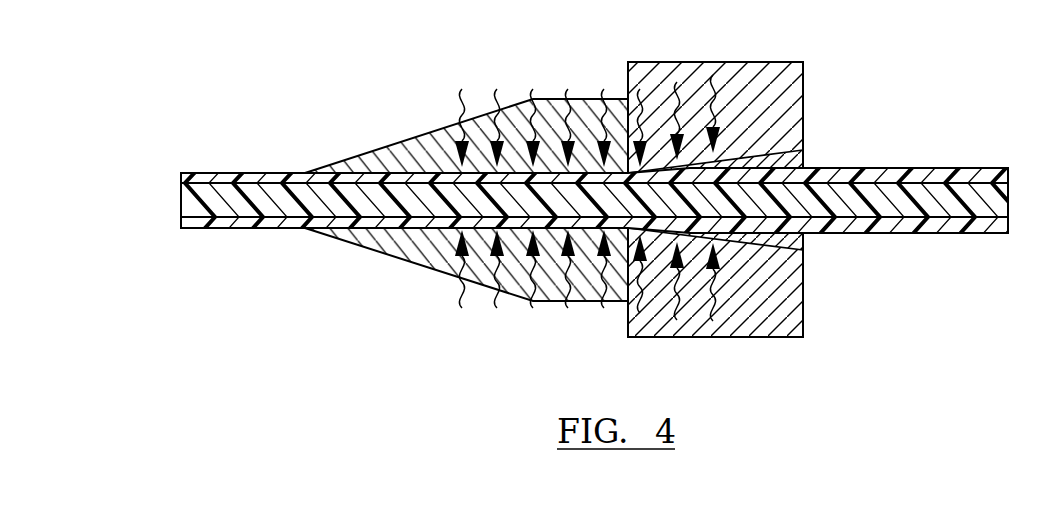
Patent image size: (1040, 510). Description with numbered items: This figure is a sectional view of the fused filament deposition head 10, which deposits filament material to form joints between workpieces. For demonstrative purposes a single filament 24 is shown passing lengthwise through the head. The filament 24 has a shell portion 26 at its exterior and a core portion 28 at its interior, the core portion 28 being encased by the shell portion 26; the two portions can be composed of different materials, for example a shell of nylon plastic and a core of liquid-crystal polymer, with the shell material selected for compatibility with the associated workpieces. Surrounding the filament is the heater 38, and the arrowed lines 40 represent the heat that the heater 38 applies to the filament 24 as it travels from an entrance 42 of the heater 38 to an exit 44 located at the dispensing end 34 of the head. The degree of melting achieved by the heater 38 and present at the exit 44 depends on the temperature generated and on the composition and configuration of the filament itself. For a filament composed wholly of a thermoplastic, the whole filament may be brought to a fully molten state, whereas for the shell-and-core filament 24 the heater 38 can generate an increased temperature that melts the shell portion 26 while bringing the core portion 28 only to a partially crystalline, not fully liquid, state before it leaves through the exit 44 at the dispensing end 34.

The fused filament deposition head 10 is at (181, 85).
The filament 24 is at (897, 168).
The shell portion 26 is at (940, 174).
The core portion 28 is at (937, 207).
The dispensing end 34 is at (302, 169).
The heater 38 is at (717, 53).
The arrowed lines 40 is at (641, 90).
The entrance 42 is at (803, 150).
The exit 44 is at (304, 230).